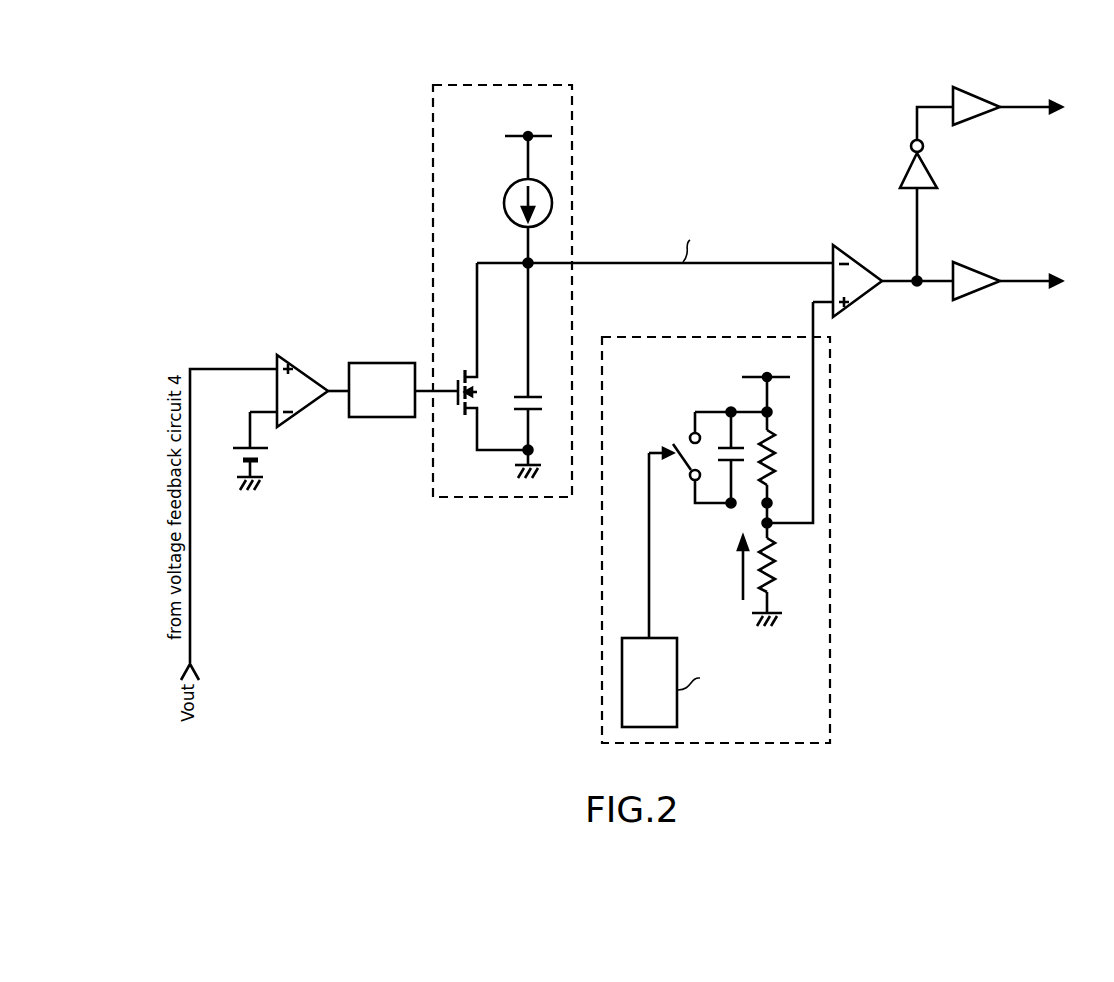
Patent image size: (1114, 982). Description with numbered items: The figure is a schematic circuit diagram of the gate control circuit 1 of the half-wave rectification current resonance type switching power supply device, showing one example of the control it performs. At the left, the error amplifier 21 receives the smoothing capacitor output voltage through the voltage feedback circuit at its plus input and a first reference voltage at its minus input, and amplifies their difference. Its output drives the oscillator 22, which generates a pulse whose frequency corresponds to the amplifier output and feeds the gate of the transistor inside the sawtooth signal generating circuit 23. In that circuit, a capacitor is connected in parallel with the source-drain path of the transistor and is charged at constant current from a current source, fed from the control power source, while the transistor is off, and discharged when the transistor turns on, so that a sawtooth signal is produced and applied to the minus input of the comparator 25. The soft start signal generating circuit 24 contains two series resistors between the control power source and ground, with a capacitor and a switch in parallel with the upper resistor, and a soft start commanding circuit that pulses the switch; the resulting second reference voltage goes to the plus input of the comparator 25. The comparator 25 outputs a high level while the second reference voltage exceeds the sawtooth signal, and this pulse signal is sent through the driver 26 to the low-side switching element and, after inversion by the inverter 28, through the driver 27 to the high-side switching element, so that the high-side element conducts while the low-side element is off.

The gate control circuit 1 is at (1010, 641).
The error amplifier 21 is at (297, 367).
The oscillator (OSC) 22 is at (370, 361).
The sawtooth signal generating circuit 23 is at (572, 176).
The soft start signal generating circuit 24 is at (830, 558).
The comparator 25 is at (833, 245).
The driver 26 is at (972, 263).
The driver 27 is at (975, 93).
The inverter (inverting circuit) 28 is at (905, 177).